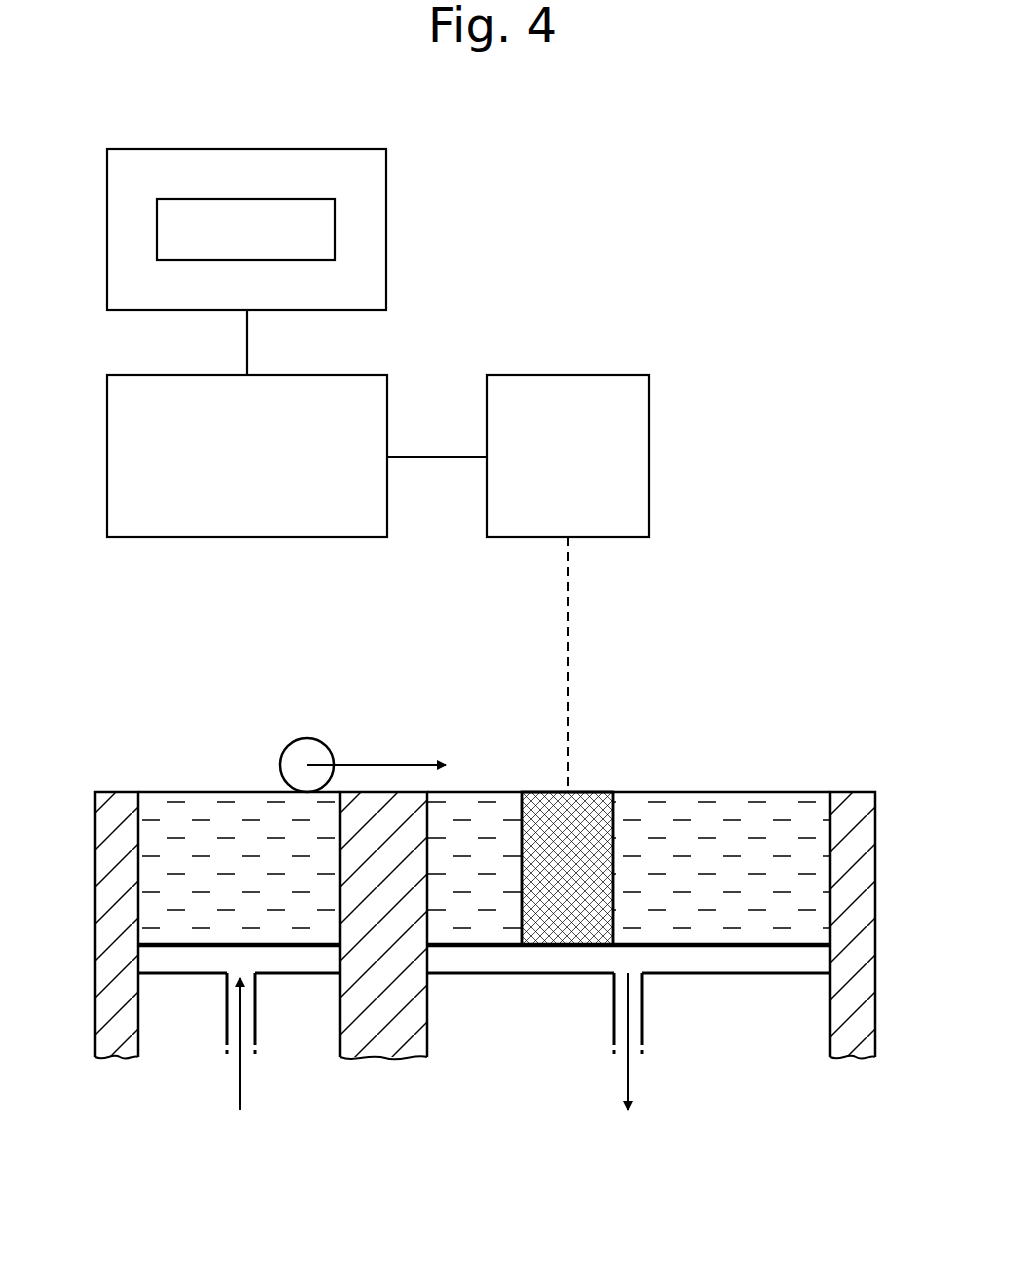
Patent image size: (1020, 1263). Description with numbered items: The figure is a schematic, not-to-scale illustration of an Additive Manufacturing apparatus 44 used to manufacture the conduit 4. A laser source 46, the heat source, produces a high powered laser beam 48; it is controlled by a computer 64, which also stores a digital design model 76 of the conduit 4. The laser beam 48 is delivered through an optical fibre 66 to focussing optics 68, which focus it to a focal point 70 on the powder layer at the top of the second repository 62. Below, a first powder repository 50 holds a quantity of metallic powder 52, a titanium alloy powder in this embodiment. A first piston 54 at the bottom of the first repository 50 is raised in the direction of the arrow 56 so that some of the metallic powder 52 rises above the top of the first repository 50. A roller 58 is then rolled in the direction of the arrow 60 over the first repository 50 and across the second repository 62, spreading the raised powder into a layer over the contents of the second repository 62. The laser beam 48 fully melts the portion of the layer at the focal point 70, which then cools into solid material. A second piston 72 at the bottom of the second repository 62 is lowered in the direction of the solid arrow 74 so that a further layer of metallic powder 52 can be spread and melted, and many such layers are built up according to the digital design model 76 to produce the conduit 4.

The conduit 4 is at (535, 800).
The Additive Manufacturing apparatus 44 is at (572, 152).
The laser source 46 is at (168, 537).
The laser beam 48 is at (568, 613).
The first powder repository 50 is at (135, 826).
The metallic powder 52 is at (210, 830).
The first piston 54 is at (303, 976).
The direction of raising first piston 56 is at (240, 1078).
The roller 58 is at (308, 750).
The direction of rolling roller 60 is at (394, 764).
The second repository 62 is at (832, 826).
The computer 64 is at (179, 148).
The optical fibre 66 is at (430, 455).
The focussing optics 68 is at (649, 425).
The focal point 70 is at (574, 792).
The second piston 72 is at (735, 976).
The direction of lowering second piston 74 is at (628, 1078).
The digital design model 76 is at (335, 222).